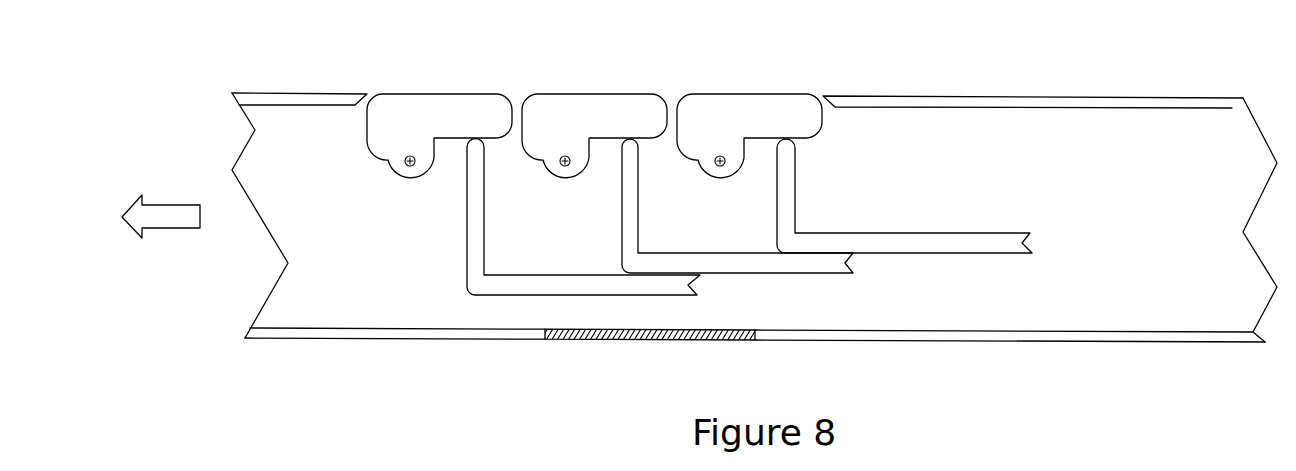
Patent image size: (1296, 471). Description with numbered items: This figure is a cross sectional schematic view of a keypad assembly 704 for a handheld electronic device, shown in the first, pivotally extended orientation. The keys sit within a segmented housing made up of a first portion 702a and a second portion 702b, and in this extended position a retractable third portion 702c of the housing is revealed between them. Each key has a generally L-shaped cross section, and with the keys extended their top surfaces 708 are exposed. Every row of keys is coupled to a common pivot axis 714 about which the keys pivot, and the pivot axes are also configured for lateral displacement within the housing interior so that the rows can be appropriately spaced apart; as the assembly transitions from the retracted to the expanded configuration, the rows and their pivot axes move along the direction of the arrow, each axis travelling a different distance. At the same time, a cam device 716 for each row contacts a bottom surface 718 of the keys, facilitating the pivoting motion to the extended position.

The first portion of the segmented housing 702a is at (960, 98).
The second portion of the segmented housing 702b is at (283, 98).
The retractable third portion of the housing 702c is at (573, 340).
The keypad assembly 704 is at (424, 32).
The top surfaces of the keys 708 is at (610, 94).
The pivot axis 714 is at (405, 164).
The cam device 716 is at (473, 242).
The bottom surface of the keys 718 is at (462, 135).